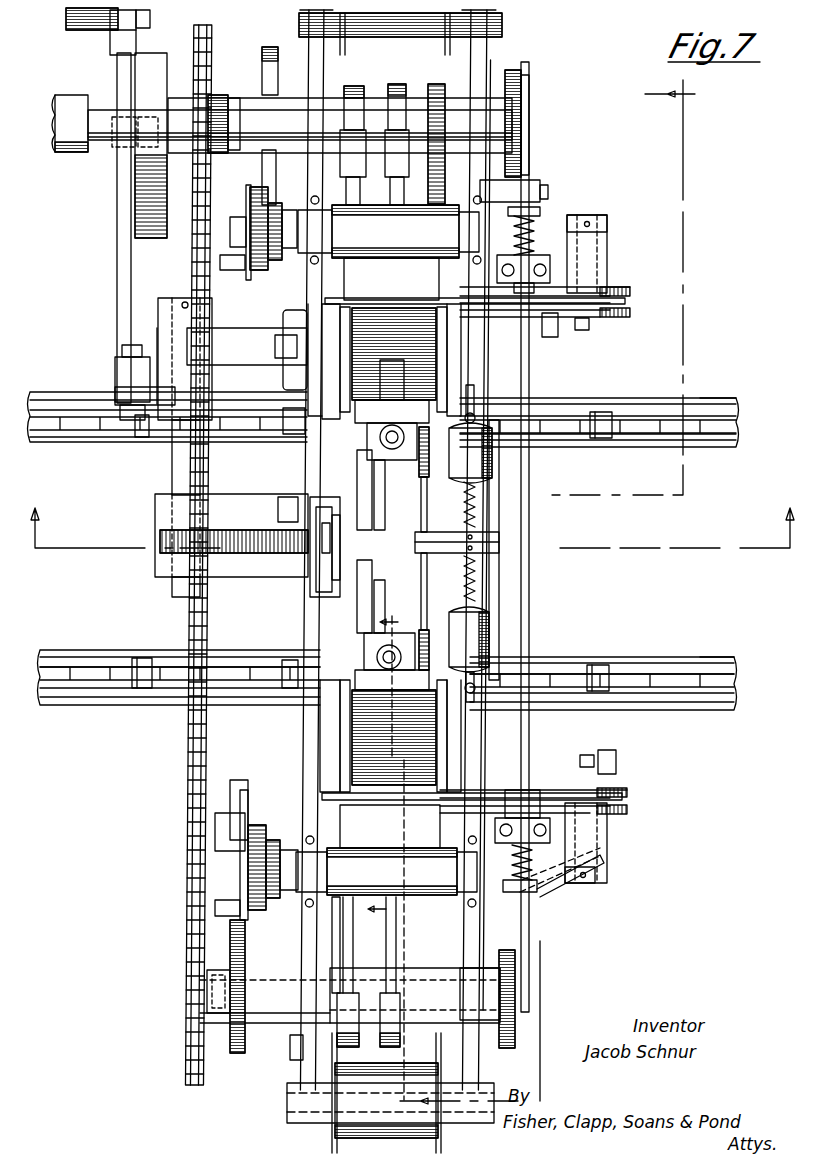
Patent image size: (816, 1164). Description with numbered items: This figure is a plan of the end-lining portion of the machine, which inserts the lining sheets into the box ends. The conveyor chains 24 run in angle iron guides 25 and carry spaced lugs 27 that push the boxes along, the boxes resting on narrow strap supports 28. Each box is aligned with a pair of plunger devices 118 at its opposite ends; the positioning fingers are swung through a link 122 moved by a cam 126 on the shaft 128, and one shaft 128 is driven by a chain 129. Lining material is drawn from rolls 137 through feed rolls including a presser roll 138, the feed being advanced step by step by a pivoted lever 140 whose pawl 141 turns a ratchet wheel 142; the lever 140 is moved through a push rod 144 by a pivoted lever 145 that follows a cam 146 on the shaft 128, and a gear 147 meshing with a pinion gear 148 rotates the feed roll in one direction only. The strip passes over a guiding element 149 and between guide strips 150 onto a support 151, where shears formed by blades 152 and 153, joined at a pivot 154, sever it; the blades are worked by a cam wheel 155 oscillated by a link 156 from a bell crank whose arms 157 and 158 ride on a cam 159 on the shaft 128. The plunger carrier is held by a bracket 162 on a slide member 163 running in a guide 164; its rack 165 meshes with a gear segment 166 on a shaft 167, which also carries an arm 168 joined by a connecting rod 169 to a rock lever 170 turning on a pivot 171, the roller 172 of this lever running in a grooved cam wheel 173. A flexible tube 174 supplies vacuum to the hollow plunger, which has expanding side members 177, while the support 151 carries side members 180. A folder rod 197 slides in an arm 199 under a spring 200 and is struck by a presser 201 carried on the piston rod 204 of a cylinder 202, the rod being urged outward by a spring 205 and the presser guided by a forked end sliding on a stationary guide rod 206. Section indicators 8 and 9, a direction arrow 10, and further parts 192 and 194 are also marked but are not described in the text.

The section line 8- 8 is at (408, 539).
The section line 9- 9 is at (536, 594).
The direction of travel 10 is at (379, 850).
The conveyor chain 24 is at (575, 436).
The angle iron members 25 is at (705, 410).
The cleats or lugs 27 is at (602, 414).
The supports 28 is at (728, 448).
The plunger devices 118 is at (392, 460).
The link 122 is at (350, 934).
The cam 126 is at (352, 100).
The shaft 128 is at (238, 115).
The chain 129 is at (447, 100).
The rolls of lining material 137 is at (300, 1128).
The presser roll 138 is at (387, 550).
The pivoted lever 140 is at (243, 800).
The pawl 141 is at (255, 190).
The ratchet wheel 142 is at (258, 205).
The push rod 144 is at (232, 272).
The pivoted lever 145 is at (222, 952).
The cam 146 is at (270, 47).
The gear 147 is at (285, 250).
The pinion gear 148 is at (275, 245).
The guiding element 149 is at (390, 553).
The guide strips 150 is at (448, 340).
The support 151 is at (430, 335).
The shear blade 152 is at (448, 306).
The shear blade 153 is at (452, 302).
The pivot 154 is at (532, 224).
The cam wheel 155 is at (610, 302).
The link 156 is at (560, 330).
The arm 157 is at (540, 878).
The arm 158 is at (515, 968).
The cam 159 is at (520, 74).
The bracket 162 is at (362, 476).
The slide member 163 is at (330, 562).
The guide 164 is at (322, 595).
The rack 165 is at (322, 545).
The gear segment 166 is at (240, 545).
The shaft 167 is at (175, 465).
The arm 168 is at (118, 394).
The connecting rod 169 is at (116, 368).
The rock lever 170 is at (117, 266).
The pivot 171 is at (108, 32).
The roller 172 is at (140, 162).
The cam wheel 173 is at (148, 236).
The flexible tube 174 is at (393, 425).
The side members 177 is at (372, 422).
The side members 180 is at (345, 352).
The rod 192 is at (392, 914).
The gear 194 is at (396, 85).
The rod 197 is at (422, 516).
The arm 199 is at (432, 630).
The spring 200 is at (430, 445).
The presser 201 is at (418, 543).
The cylinder 202 is at (475, 450).
The piston rod 204 is at (475, 500).
The spring 205 is at (478, 395).
The stationary guide rod 206 is at (492, 570).